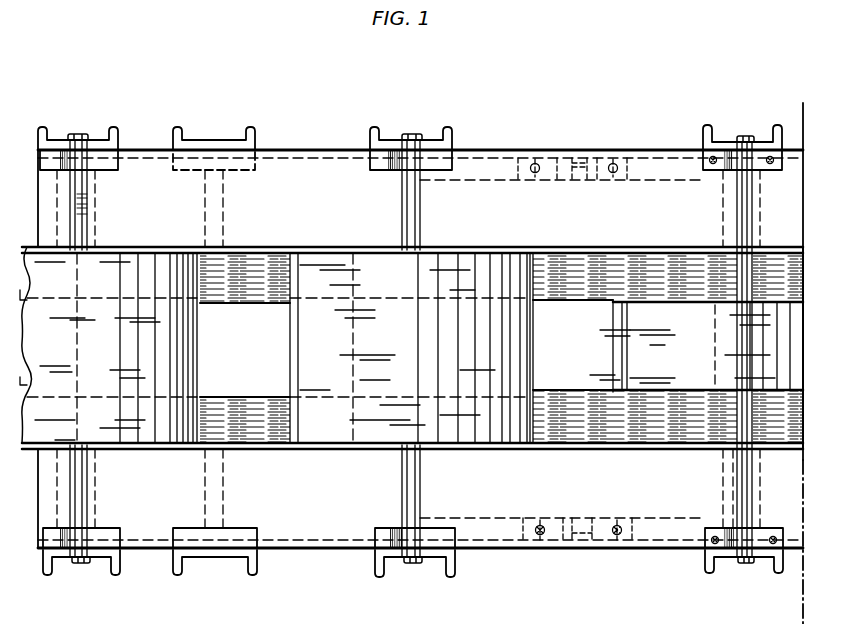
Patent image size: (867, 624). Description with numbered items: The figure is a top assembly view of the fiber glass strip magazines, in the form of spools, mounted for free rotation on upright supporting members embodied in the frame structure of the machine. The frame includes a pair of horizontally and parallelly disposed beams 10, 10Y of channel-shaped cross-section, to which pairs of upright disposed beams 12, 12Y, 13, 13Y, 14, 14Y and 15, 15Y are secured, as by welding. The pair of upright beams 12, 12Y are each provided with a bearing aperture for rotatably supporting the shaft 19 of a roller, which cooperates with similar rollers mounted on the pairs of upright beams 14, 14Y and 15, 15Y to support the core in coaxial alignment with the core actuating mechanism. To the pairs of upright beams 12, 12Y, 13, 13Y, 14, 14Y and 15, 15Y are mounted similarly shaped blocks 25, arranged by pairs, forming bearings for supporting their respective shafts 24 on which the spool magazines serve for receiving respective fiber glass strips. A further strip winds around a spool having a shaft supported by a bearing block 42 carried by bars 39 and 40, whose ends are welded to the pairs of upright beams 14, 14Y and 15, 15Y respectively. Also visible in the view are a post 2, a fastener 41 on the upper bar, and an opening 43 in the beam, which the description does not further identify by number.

The horizontally disposed beam 10 is at (337, 170).
The horizontally disposed beam 10Y is at (321, 530).
The upright disposed beam 12 is at (46, 129).
The upright disposed beam 13 is at (252, 130).
The upright disposed beam 14 is at (448, 128).
The upright disposed beam 15 is at (712, 133).
The upright disposed beam 12Y is at (114, 572).
The upright disposed beam 13Y is at (178, 573).
The upright disposed beam 14Y is at (451, 570).
The upright disposed beam 15Y is at (708, 572).
The shaft 19 is at (412, 137).
The shaft 24 is at (110, 158).
The block 25 is at (84, 236).
The post 2 is at (224, 226).
The bar 39 is at (491, 167).
The fastener 41 is at (598, 163).
The bar 40 is at (485, 538).
The bearing block 42 is at (610, 541).
The opening in beam 43 is at (708, 346).